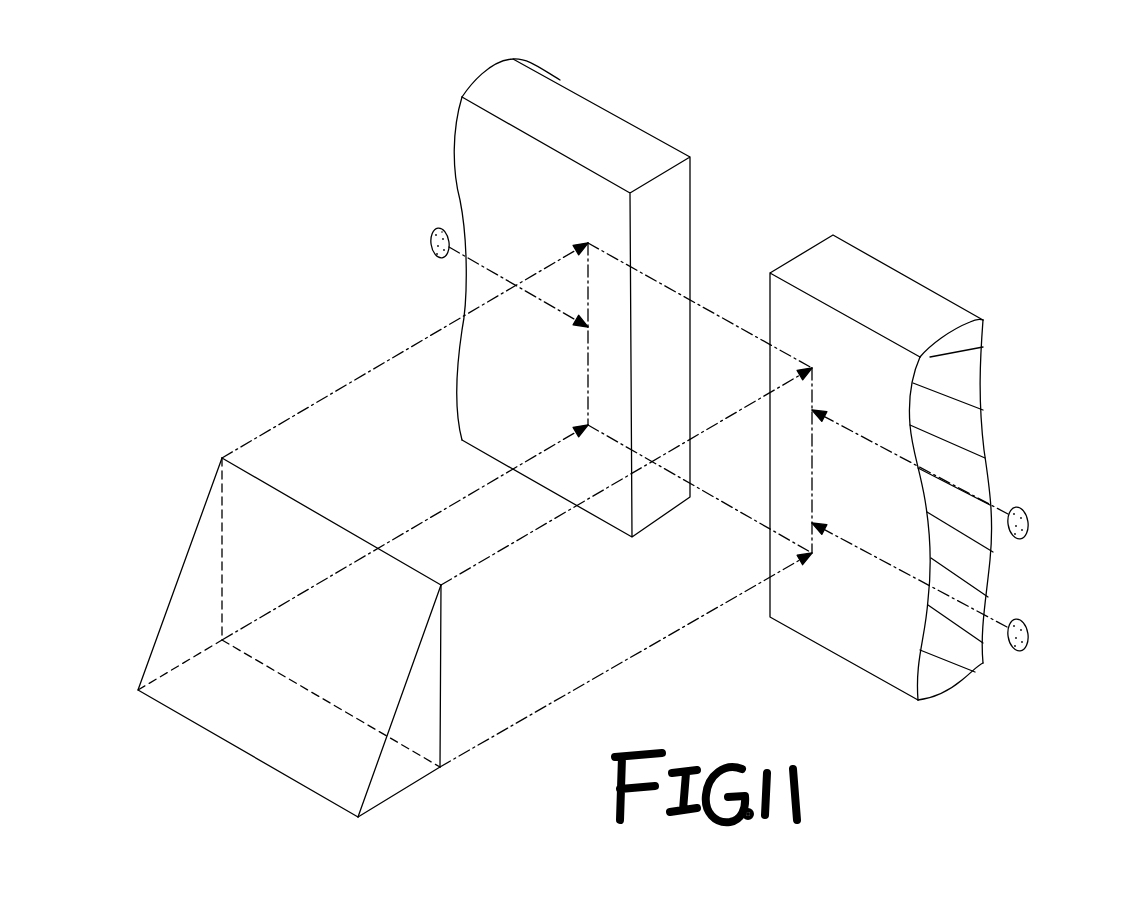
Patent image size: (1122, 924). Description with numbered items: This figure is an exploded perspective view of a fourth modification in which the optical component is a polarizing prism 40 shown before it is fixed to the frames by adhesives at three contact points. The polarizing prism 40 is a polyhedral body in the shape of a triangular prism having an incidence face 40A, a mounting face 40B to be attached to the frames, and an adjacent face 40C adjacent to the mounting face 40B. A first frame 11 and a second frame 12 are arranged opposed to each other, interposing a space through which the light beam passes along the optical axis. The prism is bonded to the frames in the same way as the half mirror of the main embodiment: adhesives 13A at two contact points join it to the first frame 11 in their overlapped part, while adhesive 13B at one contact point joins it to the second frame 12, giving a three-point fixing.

The first frame 11 is at (893, 308).
The second frame 12 is at (543, 106).
The adhesives 13A is at (1029, 523).
The adhesive 13B is at (431, 250).
The polarizing prism 40 is at (298, 665).
The incidence face 40A is at (197, 610).
The mounting face 40B is at (353, 533).
The adjacent face 40C is at (423, 683).